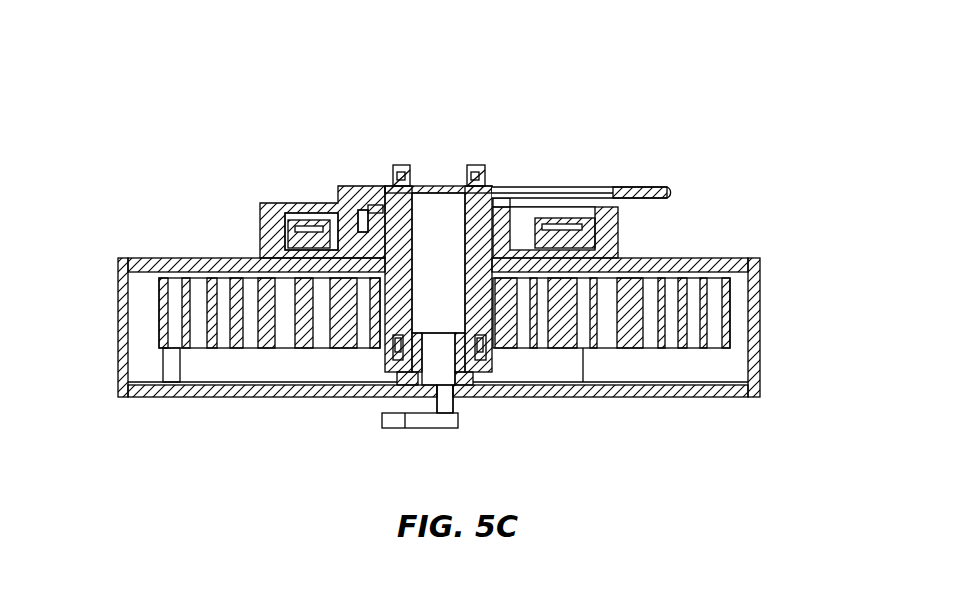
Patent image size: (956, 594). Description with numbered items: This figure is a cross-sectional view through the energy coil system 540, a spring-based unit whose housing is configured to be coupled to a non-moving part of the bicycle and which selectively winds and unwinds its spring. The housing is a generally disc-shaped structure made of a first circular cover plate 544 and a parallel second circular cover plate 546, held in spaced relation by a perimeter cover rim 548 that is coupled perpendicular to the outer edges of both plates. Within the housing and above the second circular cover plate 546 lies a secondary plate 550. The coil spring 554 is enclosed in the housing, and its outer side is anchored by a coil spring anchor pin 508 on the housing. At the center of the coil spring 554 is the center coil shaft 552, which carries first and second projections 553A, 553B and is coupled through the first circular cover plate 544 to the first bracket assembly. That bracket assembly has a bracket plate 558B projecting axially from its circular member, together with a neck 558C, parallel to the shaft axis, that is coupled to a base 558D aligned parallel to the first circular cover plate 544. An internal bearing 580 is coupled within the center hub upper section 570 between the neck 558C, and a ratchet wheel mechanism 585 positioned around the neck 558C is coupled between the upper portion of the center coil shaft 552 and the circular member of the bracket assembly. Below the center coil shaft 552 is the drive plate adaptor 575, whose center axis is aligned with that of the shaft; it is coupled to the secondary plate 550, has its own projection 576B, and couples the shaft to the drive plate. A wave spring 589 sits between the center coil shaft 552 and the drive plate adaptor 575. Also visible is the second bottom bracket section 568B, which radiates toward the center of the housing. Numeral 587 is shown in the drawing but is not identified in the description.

The energy coil system 540 is at (458, 81).
The first circular cover plate 544 is at (723, 263).
The second circular cover plate 546 is at (178, 393).
The perimeter cover rim 548 is at (122, 283).
The secondary plate 550 is at (145, 385).
The center coil shaft 552 is at (438, 187).
The first projection 553A is at (365, 186).
The second projection 553B is at (400, 186).
The coil spring 554 is at (728, 312).
The coil spring anchor pin 508 is at (603, 365).
The bracket plate 558B is at (640, 190).
The neck 558C is at (290, 215).
The base 558D is at (293, 242).
The center hub upper section 570 is at (610, 227).
The drive plate adaptor 575 is at (468, 378).
The second projection 576B is at (447, 405).
The second bottom bracket section 568B is at (422, 430).
The internal bearing 580 is at (293, 247).
The ratchet wheel mechanism 585 is at (360, 198).
The bracket block 587 is at (590, 245).
The wave spring 589 is at (485, 315).